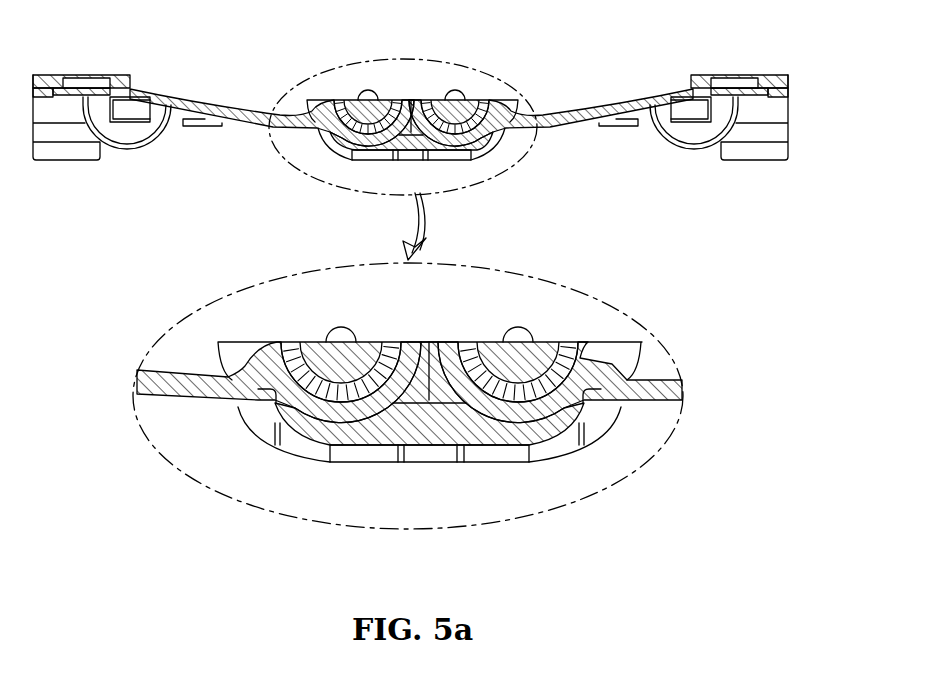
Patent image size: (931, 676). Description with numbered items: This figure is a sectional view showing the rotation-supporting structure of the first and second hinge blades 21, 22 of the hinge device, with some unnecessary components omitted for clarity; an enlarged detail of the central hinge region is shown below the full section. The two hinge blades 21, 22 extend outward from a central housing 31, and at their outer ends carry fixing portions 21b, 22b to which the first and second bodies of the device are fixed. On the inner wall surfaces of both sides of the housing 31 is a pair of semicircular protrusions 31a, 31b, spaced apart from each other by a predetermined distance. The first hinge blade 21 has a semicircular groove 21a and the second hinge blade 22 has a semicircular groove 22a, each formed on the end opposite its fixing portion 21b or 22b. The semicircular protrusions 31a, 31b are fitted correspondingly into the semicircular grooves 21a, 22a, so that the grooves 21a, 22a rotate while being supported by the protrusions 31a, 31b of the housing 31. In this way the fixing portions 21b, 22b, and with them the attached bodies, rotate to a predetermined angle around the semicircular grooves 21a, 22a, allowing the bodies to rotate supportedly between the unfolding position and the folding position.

The first hinge blade 21 is at (170, 93).
The semicircular groove 21a is at (395, 347).
The fixing portion 21b is at (48, 75).
The second hinge blade 22 is at (635, 95).
The semicircular groove 22a is at (468, 350).
The fixing portion 22b is at (773, 75).
The housing 31 is at (425, 423).
The semicircular protrusion 31a is at (333, 397).
The semicircular protrusion 31b is at (530, 392).